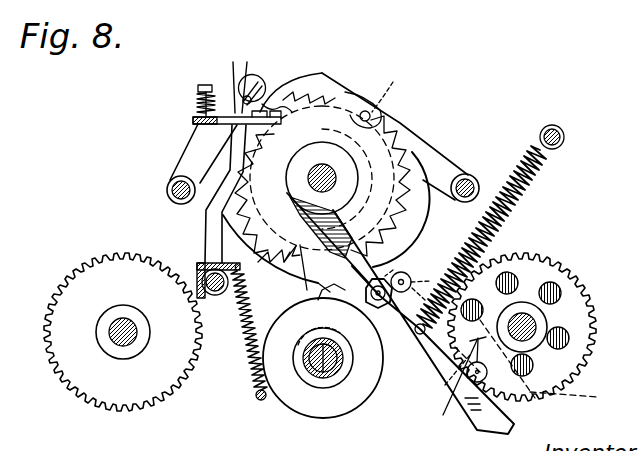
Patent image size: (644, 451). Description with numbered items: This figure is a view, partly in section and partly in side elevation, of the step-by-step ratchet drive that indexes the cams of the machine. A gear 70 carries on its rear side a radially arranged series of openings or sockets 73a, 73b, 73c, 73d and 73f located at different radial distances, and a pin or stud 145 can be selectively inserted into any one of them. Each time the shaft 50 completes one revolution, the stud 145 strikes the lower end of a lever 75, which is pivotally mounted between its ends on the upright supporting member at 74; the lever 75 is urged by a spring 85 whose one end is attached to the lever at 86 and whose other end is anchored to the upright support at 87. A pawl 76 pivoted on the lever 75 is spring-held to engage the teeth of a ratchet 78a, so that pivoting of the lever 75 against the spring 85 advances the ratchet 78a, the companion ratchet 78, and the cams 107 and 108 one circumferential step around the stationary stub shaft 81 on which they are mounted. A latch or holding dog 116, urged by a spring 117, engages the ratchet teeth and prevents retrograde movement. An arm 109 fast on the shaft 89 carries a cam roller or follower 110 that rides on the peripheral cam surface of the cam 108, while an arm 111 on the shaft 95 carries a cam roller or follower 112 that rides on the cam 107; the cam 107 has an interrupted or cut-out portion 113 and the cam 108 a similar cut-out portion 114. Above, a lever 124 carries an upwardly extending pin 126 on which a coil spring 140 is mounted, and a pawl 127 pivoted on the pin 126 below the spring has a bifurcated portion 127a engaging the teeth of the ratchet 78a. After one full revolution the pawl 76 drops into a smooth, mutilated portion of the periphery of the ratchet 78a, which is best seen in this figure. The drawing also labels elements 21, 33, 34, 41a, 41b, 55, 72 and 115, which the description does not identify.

The lever 21 is at (422, 374).
The shaft 33 is at (340, 356).
The hub 34 is at (330, 376).
The wheel 41a is at (300, 411).
The wheel portion 41b is at (304, 338).
The shaft 50 is at (537, 322).
The shaft 55 is at (128, 322).
The worm gear 70 is at (586, 339).
The gear 72 is at (170, 386).
The opening or socket 73a is at (475, 304).
The opening or socket 73b is at (560, 286).
The opening or socket 73c is at (512, 272).
The opening or socket 73d is at (566, 348).
The opening or socket 73f is at (527, 377).
The pivot 74 is at (372, 308).
The lever 75 is at (450, 375).
The pawl 76 is at (352, 296).
The ratchet 78 is at (288, 270).
The ratchet 78a is at (274, 264).
The stub shaft 81 is at (326, 165).
The spring 85 is at (520, 194).
The spring attachment point 86 is at (417, 335).
The spring anchorage 87 is at (559, 128).
The shaft 89 is at (470, 176).
The shaft 95 is at (167, 190).
The cam 107 is at (294, 78).
The cam 108 is at (408, 230).
The arm 109 is at (413, 128).
The cam roller or follower 110 is at (395, 93).
The arm 111 is at (188, 156).
The cam roller or follower 112 is at (233, 80).
The interrupted or cut-out portion 113 is at (340, 88).
The interrupted or cut-out portion 114 is at (420, 138).
The bracket 115 is at (220, 300).
The latch or holding dog 116 is at (205, 228).
The spring 117 is at (248, 345).
The lever 124 is at (194, 120).
The pin 126 is at (200, 85).
The pawl 127 is at (232, 78).
The bifurcated portion 127a is at (281, 187).
The coil spring 140 is at (197, 102).
The pin or stud 145 is at (450, 388).